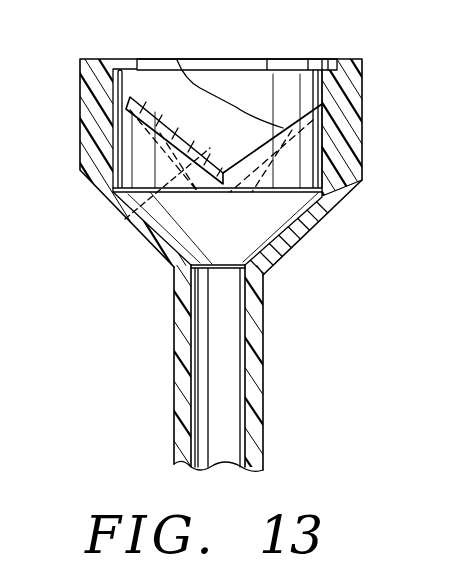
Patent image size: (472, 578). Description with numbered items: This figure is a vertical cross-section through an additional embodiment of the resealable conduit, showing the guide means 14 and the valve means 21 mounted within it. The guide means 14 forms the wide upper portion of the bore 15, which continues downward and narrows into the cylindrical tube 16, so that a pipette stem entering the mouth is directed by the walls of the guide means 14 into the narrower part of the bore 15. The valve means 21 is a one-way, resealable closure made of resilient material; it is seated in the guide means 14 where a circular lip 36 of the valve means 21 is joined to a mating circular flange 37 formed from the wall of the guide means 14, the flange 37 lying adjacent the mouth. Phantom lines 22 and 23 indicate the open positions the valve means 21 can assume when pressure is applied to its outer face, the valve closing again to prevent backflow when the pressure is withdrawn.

The guide means 14 is at (80, 150).
The bore 15 is at (232, 336).
The cylindrical tube 16 is at (176, 295).
The valve means 21 is at (165, 104).
The phantom line 22 is at (125, 219).
The phantom line 23 is at (318, 216).
The circular lip 36 is at (115, 58).
The circular flange 37 is at (118, 96).